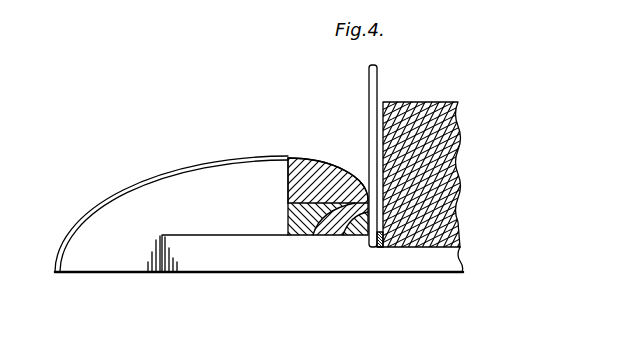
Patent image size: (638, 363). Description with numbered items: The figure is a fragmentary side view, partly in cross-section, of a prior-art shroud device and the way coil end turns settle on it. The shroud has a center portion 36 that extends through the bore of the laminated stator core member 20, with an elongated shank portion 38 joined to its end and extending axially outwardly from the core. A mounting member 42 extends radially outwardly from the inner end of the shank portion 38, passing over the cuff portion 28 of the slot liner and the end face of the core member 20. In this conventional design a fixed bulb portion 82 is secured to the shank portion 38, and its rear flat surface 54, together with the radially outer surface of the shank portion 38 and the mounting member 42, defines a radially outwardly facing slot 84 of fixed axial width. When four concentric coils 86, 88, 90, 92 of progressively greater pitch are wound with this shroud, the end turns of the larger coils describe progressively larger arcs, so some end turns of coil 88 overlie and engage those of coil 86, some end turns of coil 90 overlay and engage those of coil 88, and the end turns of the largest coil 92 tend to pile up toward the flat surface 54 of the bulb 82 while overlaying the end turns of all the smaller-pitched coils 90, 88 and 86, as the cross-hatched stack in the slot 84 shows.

The stator core member 20 is at (431, 102).
The cuff portion 28 is at (382, 247).
The center portion 36 is at (462, 262).
The shank portion 38 is at (192, 250).
The mounting member 42 is at (368, 76).
The rear flat surface 54 is at (288, 156).
The bulb portion 82 is at (178, 177).
The slot 84 is at (358, 172).
The coil 86 is at (358, 228).
The coil 88 is at (330, 226).
The coil 90 is at (297, 227).
The coil 92 is at (305, 183).